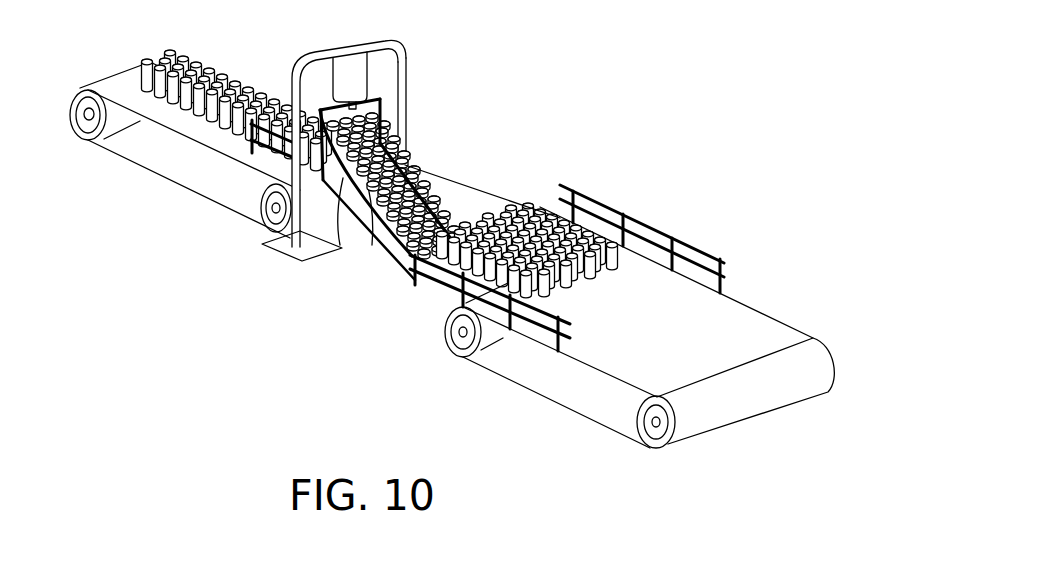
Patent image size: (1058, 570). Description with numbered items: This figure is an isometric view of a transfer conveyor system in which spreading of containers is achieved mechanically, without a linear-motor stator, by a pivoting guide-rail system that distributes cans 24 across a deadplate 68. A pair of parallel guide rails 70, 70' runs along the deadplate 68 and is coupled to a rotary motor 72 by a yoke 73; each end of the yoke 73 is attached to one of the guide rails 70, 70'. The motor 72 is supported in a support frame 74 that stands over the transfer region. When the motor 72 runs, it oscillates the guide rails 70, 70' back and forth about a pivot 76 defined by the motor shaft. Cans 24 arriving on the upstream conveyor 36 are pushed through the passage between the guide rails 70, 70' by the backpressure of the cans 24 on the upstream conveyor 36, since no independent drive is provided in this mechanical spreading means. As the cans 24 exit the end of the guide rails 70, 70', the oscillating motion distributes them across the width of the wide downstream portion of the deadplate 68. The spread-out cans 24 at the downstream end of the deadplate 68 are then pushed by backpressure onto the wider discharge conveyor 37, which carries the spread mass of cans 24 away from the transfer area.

The upstream conveyor 36 is at (200, 138).
The discharge conveyor 37 is at (760, 313).
The rotary motor 72 is at (346, 54).
The yoke 73 is at (368, 92).
The support frame 74 is at (405, 98).
The pivot 76 is at (340, 86).
The guide rail 70 is at (395, 179).
The guide rail 70' is at (345, 230).
The deadplate 68 is at (386, 253).
The cans 24 is at (455, 195).